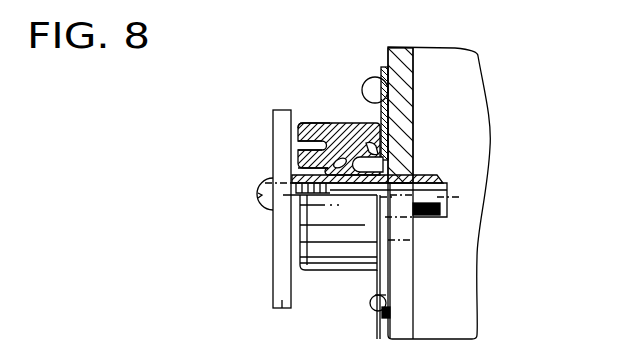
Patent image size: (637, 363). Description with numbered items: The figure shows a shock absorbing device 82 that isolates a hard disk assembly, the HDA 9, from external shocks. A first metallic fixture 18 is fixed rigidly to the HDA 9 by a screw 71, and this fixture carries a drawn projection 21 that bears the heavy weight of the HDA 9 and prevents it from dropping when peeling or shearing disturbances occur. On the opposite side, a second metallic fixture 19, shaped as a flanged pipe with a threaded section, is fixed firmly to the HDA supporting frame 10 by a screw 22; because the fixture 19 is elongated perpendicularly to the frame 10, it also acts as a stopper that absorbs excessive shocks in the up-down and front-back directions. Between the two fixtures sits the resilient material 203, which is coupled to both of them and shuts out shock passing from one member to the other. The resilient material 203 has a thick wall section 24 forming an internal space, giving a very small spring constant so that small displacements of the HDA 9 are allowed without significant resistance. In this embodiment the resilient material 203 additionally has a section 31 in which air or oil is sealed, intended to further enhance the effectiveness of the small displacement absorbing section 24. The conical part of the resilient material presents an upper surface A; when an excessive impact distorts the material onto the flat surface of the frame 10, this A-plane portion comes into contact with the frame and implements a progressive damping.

The HDA 9 is at (477, 315).
The first metallic fixture 18 is at (393, 113).
The screw 71 is at (373, 78).
The resilient material 203 is at (391, 113).
The section 31 is at (333, 123).
The drawn projection 21 is at (373, 150).
The thick wall section 24 is at (385, 165).
The upper surface A is at (297, 133).
The second metallic fixture 19 is at (447, 182).
The shock absorbing device 82 is at (338, 272).
The screw 22 is at (268, 208).
The HDA supporting frame 10 is at (281, 304).